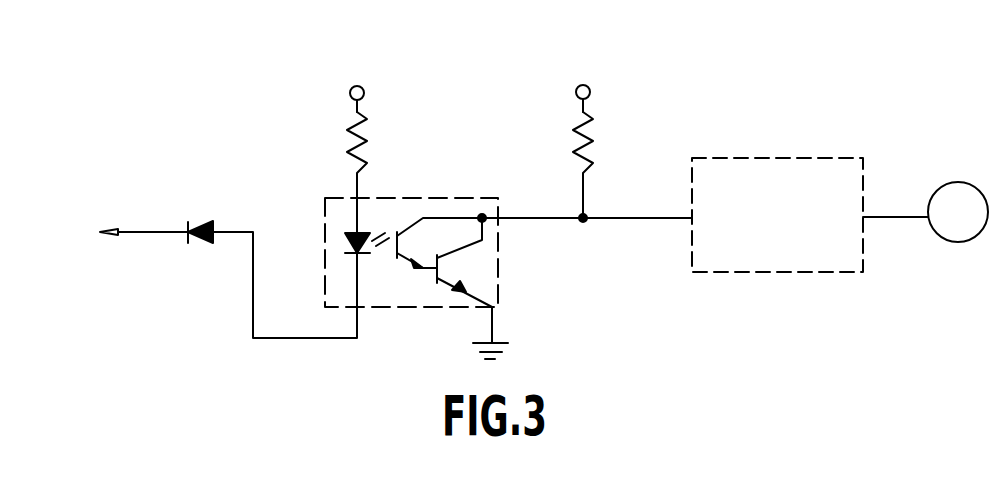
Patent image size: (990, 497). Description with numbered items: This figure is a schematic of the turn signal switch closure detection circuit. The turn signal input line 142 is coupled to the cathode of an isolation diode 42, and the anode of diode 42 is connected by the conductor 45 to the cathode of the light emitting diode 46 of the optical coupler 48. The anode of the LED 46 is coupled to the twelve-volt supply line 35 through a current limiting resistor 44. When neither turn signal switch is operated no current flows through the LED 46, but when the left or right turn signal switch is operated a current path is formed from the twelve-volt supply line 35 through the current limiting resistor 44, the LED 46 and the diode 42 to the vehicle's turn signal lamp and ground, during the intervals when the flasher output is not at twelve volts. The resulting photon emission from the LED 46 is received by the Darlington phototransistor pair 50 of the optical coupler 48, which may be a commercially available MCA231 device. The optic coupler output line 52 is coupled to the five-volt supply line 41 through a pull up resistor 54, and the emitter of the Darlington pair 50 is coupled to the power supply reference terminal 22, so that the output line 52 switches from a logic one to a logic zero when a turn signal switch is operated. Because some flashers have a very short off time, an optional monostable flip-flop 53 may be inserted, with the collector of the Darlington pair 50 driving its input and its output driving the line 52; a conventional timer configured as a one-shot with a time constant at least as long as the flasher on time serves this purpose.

The turn signal input line 142 is at (130, 235).
The isolation diode 42 is at (207, 222).
The conductor 45 is at (255, 236).
The 12-volt supply line 35 is at (365, 91).
The current limiting resistor 44 is at (367, 141).
The 5-volt supply line 41 is at (591, 91).
The pull up resistor 54 is at (593, 141).
The optical coupler 48 is at (466, 197).
The light emitting diode 46 is at (337, 244).
The Darlington phototransistor pair 50 is at (445, 265).
The power supply reference terminal 22 is at (475, 345).
The monostable flip-flop 53 is at (776, 157).
The optic coupler output line 52 is at (900, 210).